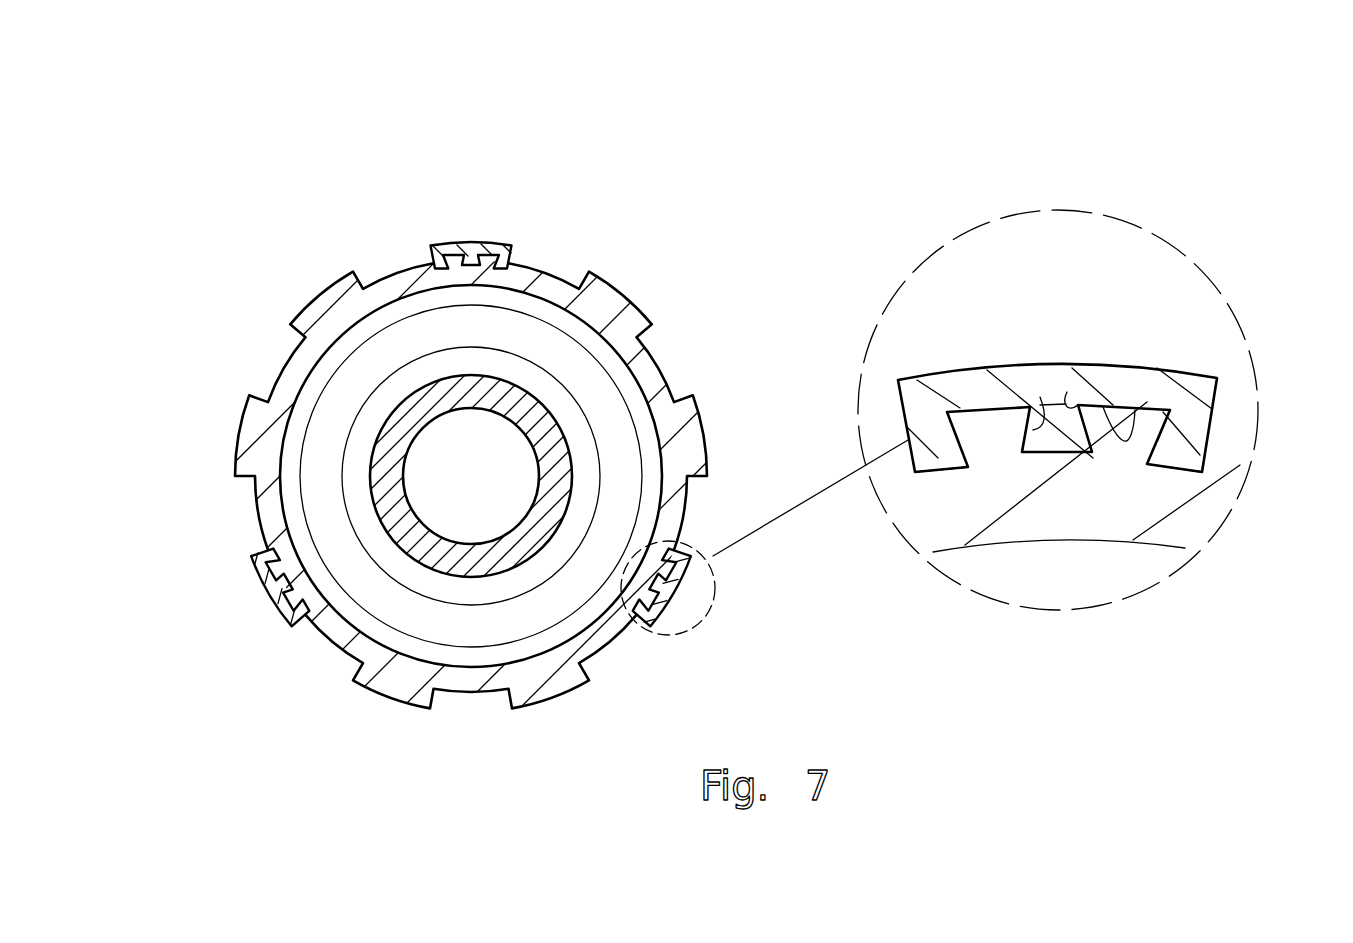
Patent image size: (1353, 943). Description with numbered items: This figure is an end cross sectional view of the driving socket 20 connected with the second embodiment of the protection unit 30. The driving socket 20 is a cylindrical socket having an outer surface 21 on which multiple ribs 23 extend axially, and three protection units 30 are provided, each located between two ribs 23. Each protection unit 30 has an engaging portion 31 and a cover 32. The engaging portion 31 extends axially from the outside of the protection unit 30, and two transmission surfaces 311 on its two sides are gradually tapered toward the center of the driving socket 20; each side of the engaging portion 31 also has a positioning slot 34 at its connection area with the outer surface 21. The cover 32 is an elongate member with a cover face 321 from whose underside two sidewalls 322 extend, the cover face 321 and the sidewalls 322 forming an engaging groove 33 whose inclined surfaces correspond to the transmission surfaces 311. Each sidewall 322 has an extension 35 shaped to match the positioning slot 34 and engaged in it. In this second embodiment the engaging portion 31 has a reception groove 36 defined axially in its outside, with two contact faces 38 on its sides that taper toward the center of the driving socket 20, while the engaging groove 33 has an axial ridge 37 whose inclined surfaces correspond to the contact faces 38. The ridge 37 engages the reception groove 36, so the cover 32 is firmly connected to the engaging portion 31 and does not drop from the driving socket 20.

The driving socket 20 is at (436, 435).
The outer surface 21 is at (393, 272).
The ribs 23 is at (317, 300).
The protection unit 30 is at (606, 136).
The engaging portion 31 is at (467, 250).
The cover 32 is at (512, 256).
The engaging groove 33 is at (1135, 410).
The positioning slot 34 is at (1175, 457).
The extension 35 is at (935, 457).
The reception groove 36 is at (1063, 443).
The ridge 37 is at (1100, 523).
The contact faces 38 is at (1040, 397).
The transmission surfaces 311 is at (950, 423).
The cover face 321 is at (1052, 385).
The sidewalls 322 is at (935, 437).